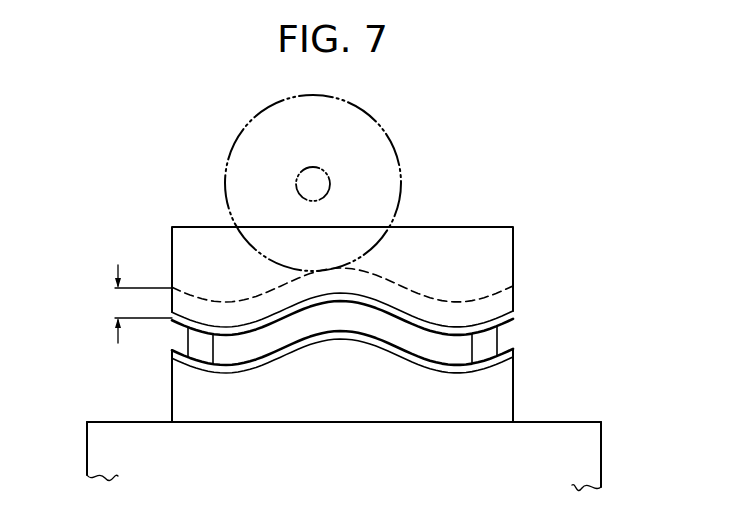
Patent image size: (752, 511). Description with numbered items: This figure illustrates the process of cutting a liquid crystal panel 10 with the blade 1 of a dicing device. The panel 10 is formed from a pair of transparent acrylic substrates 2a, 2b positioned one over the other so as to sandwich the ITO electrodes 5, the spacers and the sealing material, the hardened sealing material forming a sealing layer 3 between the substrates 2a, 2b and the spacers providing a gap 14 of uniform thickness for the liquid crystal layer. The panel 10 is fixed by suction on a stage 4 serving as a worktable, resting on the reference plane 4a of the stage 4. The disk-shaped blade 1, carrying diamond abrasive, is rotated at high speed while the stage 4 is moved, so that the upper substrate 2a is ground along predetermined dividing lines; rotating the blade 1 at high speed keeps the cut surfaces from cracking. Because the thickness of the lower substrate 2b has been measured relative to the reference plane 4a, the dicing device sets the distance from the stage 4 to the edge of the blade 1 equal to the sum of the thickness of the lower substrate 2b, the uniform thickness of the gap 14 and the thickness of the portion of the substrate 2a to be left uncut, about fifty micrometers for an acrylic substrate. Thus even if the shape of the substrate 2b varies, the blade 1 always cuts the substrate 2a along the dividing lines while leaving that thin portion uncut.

The blade 1 is at (363, 139).
The panel 10 is at (475, 204).
The substrate 2a is at (497, 251).
The lower substrate 2b is at (497, 393).
The ITO electrodes 5 is at (500, 345).
The gap 14 is at (228, 348).
The sealing layer 3 is at (484, 348).
The stage 4 is at (568, 458).
The reference plane 4a is at (119, 421).